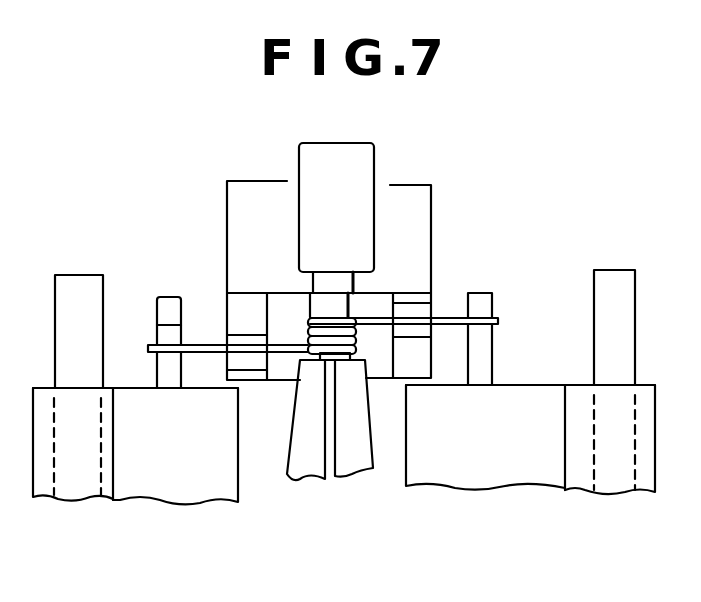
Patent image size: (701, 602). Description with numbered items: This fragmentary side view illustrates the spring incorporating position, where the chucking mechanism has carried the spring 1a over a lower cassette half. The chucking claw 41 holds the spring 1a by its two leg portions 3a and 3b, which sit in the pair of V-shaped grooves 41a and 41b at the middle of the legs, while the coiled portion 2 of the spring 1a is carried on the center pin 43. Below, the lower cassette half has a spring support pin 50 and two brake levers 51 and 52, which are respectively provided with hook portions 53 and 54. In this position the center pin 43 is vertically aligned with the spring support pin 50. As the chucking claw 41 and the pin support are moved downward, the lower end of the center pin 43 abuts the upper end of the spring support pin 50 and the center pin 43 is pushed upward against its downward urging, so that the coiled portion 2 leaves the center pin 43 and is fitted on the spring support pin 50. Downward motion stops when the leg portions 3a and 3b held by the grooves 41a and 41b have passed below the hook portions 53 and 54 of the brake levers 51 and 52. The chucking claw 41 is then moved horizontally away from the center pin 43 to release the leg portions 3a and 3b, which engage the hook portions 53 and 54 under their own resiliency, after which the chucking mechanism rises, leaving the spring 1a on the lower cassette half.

The spring 1a is at (295, 336).
The coiled portion 2 is at (357, 339).
The leg portion 3a is at (455, 317).
The leg portion 3b is at (197, 343).
The chucking claw 41 is at (430, 182).
The V-shaped groove 41a is at (413, 309).
The V-shaped groove 41b is at (240, 362).
The center pin 43 is at (348, 282).
The spring support pin 50 is at (332, 303).
The brake lever 51 is at (168, 483).
The brake lever 52 is at (495, 468).
The hook portion 53 is at (156, 296).
The hook portion 54 is at (488, 296).